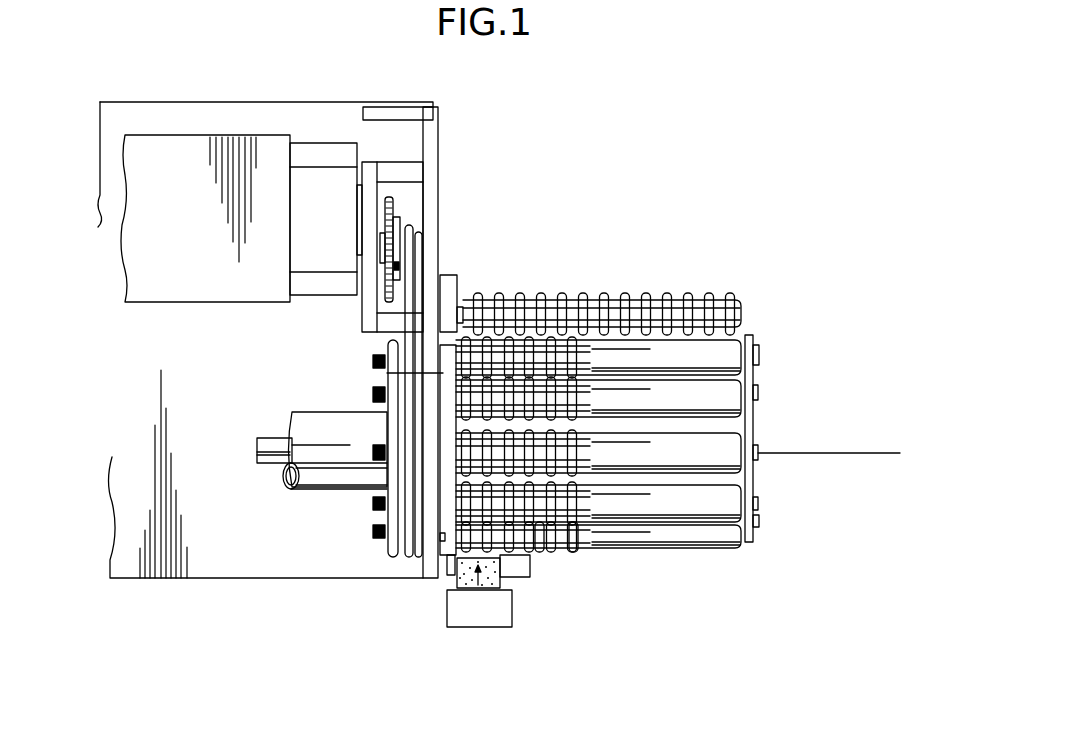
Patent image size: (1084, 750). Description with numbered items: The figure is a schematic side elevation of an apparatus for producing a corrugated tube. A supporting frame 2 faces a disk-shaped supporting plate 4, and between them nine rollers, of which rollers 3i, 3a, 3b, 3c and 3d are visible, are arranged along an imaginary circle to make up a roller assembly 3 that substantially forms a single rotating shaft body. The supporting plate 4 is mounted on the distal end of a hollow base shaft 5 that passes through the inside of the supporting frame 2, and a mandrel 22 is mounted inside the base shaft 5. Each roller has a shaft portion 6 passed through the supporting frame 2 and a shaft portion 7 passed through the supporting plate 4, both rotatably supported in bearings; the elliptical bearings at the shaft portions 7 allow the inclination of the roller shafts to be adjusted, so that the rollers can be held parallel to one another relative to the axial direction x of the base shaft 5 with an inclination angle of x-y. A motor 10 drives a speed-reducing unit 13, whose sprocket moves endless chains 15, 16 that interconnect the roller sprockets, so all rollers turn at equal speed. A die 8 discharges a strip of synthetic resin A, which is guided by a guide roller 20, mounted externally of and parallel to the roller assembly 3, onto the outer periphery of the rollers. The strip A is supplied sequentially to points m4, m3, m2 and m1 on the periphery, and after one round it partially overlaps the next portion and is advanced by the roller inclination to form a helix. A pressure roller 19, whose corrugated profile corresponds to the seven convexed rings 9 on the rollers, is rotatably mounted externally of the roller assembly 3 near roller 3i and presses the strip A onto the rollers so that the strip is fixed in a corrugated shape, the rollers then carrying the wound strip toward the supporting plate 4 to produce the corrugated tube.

The supporting frame 2 is at (438, 170).
The roller assembly 3 is at (642, 468).
The roller 3i is at (740, 345).
The roller 3a is at (740, 410).
The roller 3b is at (745, 438).
The roller 3c is at (745, 490).
The roller 3d is at (690, 550).
The supporting plate 4 is at (752, 335).
The hollow base shaft 5 is at (295, 490).
The shaft portion 6 is at (372, 527).
The shaft portion 7 is at (759, 355).
The die 8 is at (477, 628).
The convexed rings 9 is at (573, 552).
The motor 10 is at (195, 302).
The speed-reducing unit 13 is at (357, 303).
The endless chain 15 is at (413, 273).
The endless chain 16 is at (386, 380).
The pressure roller 19 is at (500, 297).
The guide roller 20 is at (530, 580).
The mandrel 22 is at (270, 437).
The strip of synthetic resin A is at (457, 583).
The point m1 is at (386, 378).
The point m2 is at (453, 474).
The point m3 is at (440, 537).
The point m4 is at (437, 568).
The axial direction x is at (873, 417).
The inclination reference y is at (873, 455).